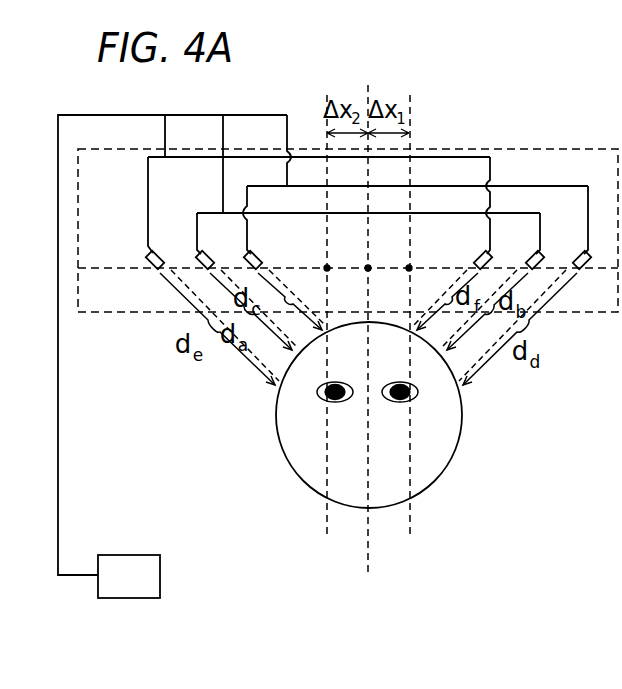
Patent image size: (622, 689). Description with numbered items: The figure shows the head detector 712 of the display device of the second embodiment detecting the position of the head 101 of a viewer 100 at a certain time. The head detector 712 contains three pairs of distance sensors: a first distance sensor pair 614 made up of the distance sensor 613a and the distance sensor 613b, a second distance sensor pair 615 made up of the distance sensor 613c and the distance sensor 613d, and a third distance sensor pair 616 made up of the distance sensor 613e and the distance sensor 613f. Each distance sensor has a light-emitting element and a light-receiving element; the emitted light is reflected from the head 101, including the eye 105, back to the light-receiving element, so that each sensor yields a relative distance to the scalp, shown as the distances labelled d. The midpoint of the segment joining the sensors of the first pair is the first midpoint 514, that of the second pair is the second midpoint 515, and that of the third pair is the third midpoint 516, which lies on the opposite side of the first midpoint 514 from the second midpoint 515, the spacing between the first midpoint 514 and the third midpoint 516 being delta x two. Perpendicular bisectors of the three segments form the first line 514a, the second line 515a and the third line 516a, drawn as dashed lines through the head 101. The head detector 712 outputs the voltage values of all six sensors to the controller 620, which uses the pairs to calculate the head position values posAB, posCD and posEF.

The head detector 712 is at (563, 149).
The third distance sensor pair 616 is at (148, 185).
The second distance sensor pair 615 is at (247, 193).
The first distance sensor pair 614 is at (197, 232).
The distance sensor 613a is at (204, 254).
The distance sensor 613b is at (534, 254).
The distance sensor 613c is at (260, 255).
The distance sensor 613d is at (577, 253).
The distance sensor 613e is at (146, 259).
The distance sensor 613f is at (478, 255).
The third midpoint 516 is at (330, 272).
The second midpoint 515 is at (408, 266).
The first midpoint 514 is at (371, 272).
The third line 516a is at (328, 329).
The second line 515a is at (408, 329).
The first line 514a is at (367, 343).
The viewer 100 is at (277, 433).
The head 101 is at (290, 394).
The eye 105 is at (403, 400).
The controller 620 is at (128, 555).